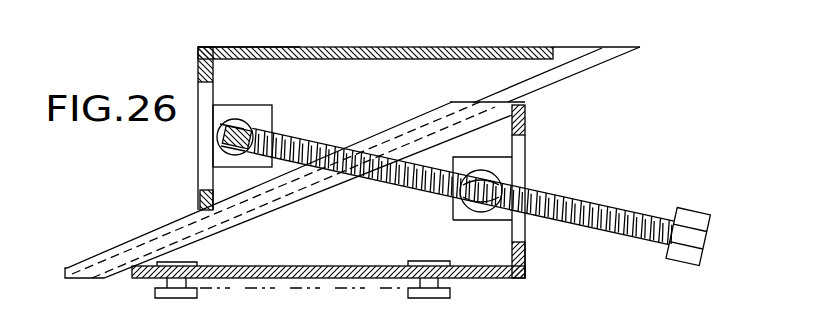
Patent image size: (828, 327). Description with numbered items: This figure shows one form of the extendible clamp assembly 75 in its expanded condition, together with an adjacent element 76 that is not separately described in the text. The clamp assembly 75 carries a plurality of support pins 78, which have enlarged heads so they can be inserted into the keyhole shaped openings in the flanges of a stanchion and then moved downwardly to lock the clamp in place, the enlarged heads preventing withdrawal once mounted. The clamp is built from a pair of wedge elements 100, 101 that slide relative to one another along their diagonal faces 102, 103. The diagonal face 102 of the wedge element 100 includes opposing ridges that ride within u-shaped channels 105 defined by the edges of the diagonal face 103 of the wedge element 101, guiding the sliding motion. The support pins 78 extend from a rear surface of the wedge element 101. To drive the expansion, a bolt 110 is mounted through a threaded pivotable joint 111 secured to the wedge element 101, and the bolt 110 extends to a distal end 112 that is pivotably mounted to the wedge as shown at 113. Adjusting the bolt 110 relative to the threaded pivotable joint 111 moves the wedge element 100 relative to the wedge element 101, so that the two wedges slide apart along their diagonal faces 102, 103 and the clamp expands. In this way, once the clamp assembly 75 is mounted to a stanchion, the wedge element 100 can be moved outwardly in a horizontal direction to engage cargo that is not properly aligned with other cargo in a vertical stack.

The clamp assembly 75 is at (186, 76).
The frame member 76 is at (188, 23).
The support pins 78 is at (596, 23).
The wedge element 100 is at (478, 46).
The wedge element 101 is at (526, 116).
The diagonal face 102 is at (542, 88).
The diagonal face 103 is at (139, 238).
The u-shaped channels 105 is at (410, 126).
The bolt 110 is at (618, 233).
The pivotable joint 111 is at (461, 221).
The distal end 112 is at (272, 124).
The pivotable mounting 113 is at (222, 156).